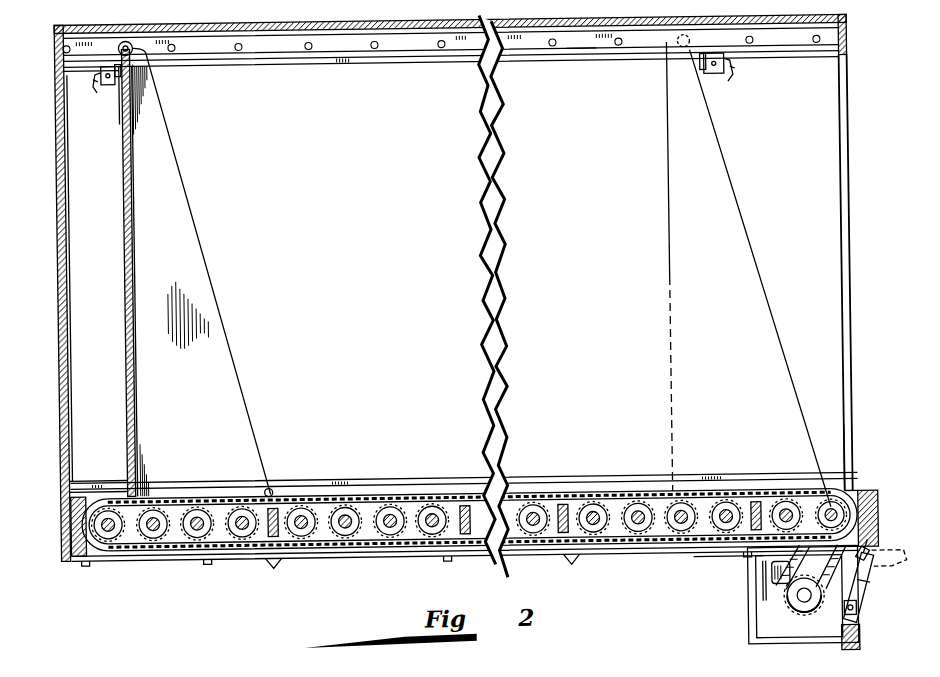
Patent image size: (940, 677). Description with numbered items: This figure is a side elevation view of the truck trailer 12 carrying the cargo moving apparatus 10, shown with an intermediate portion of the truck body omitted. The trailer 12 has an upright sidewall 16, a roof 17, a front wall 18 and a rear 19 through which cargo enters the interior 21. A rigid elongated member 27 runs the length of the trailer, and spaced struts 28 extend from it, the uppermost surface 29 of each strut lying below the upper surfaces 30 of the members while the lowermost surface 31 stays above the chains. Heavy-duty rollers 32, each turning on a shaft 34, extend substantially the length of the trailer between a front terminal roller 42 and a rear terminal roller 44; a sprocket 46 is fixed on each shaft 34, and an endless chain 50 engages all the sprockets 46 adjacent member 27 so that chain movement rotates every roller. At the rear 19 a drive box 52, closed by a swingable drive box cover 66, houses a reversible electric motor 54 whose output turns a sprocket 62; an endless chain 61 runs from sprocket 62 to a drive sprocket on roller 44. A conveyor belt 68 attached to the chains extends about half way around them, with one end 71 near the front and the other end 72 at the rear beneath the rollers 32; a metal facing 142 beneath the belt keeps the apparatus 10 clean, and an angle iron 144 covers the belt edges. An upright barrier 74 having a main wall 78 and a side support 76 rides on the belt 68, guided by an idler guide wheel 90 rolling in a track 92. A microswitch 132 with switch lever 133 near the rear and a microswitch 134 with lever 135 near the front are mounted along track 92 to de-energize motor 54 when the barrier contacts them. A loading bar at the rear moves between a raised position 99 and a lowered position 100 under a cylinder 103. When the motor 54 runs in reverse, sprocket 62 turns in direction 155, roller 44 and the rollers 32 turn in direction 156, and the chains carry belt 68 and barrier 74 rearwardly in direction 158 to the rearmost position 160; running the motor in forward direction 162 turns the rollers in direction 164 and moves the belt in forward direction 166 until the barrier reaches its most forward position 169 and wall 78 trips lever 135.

The cargo moving apparatus 10 is at (400, 325).
The truck trailer 12 is at (860, 68).
The sidewall 16 is at (323, 238).
The roof 17 is at (349, 33).
The front wall 18 is at (67, 164).
The rear 19 is at (852, 40).
The interior 21 is at (845, 107).
The elongated member 27 is at (876, 498).
The struts 28 is at (80, 492).
The uppermost surface 29 is at (462, 505).
The upper surfaces 30 is at (847, 450).
The lowermost surface 31 is at (458, 540).
The rollers 32 is at (215, 545).
The shaft 34 is at (343, 540).
The front terminal roller 42 is at (118, 538).
The rear terminal roller 44 is at (817, 505).
The sprocket 46 is at (90, 520).
The endless chain 50 is at (100, 546).
The drive box 52 is at (700, 669).
The reversible electric motor 54 is at (788, 612).
The endless chain 61 is at (780, 596).
The sprocket 62 is at (797, 620).
The drive box cover 66 is at (838, 634).
The conveyor belt 68 is at (362, 492).
The end 71 is at (267, 472).
The end 72 is at (757, 549).
The barrier 74 is at (196, 154).
The side support 76 is at (144, 219).
The main wall 78 is at (136, 254).
The idler guide wheel 90 is at (136, 48).
The track 92 is at (576, 46).
The raised position 99 is at (860, 496).
The lowered position 100 is at (874, 562).
The cylinder 103 is at (856, 620).
The microswitch 132 is at (729, 78).
The switch lever 133 is at (707, 68).
The microswitch 134 is at (112, 80).
The lever 135 is at (120, 70).
The metal facing 142 is at (269, 564).
The angle iron 144 is at (334, 480).
The direction 155 is at (828, 578).
The direction 156 is at (862, 516).
The direction 158 is at (210, 449).
The rearmost position 160 is at (670, 155).
The forward direction 162 is at (775, 584).
The direction 164 is at (806, 512).
The forward direction 166 is at (140, 449).
The most forward position 169 is at (125, 196).